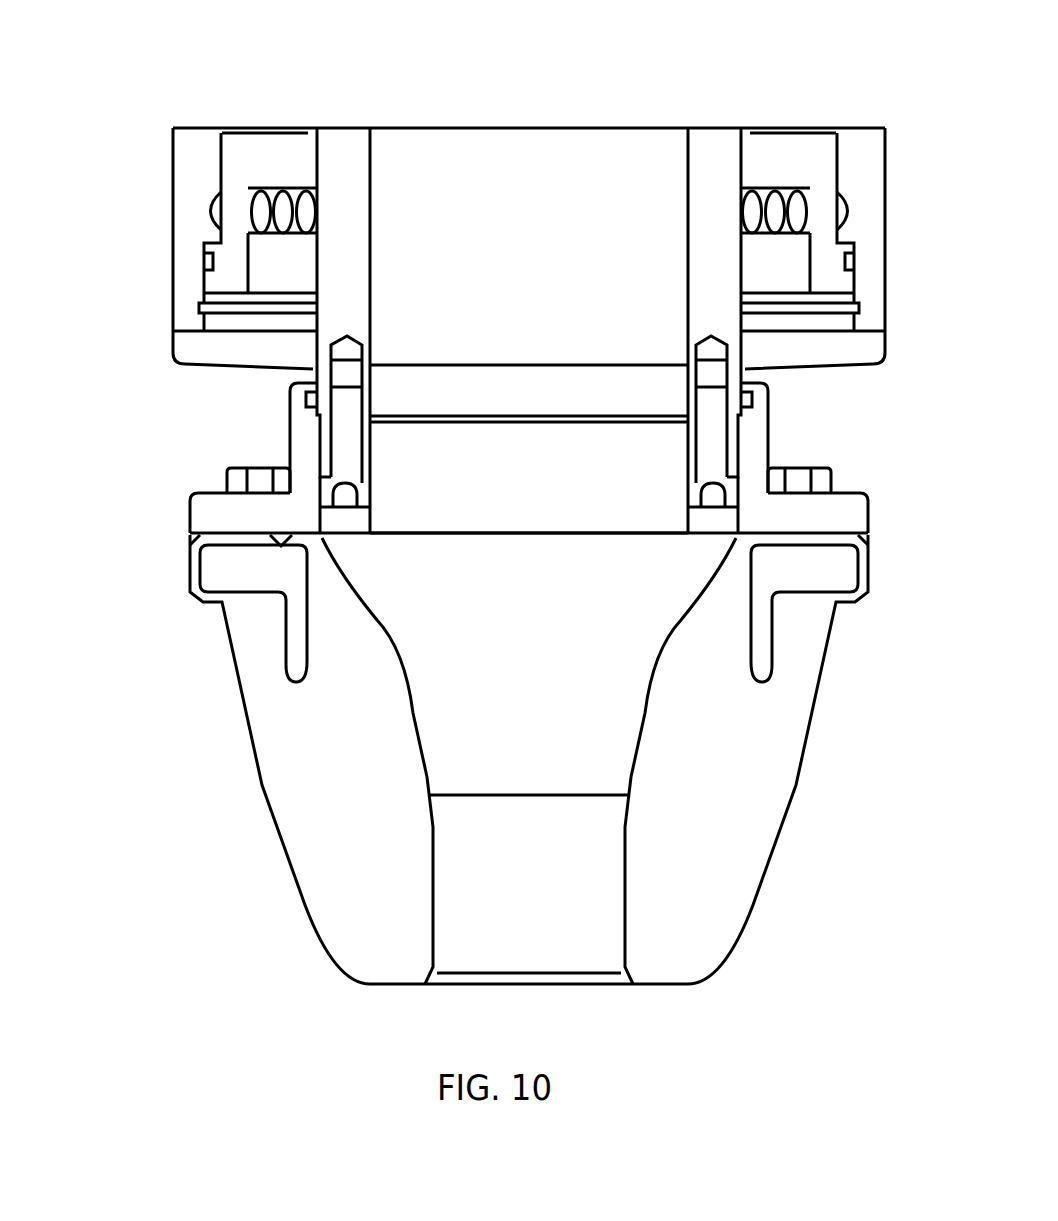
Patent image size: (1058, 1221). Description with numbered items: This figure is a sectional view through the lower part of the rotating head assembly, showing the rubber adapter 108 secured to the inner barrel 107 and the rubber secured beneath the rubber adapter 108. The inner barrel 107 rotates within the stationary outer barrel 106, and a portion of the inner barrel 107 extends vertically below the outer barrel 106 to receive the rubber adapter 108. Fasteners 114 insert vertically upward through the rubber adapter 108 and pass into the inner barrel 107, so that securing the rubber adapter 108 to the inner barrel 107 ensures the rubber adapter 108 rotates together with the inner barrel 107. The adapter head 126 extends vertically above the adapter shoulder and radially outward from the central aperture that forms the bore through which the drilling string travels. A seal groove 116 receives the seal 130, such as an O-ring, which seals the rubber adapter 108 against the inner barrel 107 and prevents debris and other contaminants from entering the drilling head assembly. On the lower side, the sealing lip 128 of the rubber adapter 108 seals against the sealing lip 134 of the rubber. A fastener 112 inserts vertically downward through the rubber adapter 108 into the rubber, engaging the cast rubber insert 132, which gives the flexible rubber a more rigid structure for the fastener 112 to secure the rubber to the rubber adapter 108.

The outer barrel 106 is at (858, 148).
The inner barrel 107 is at (708, 140).
The rubber adapter 108 is at (857, 515).
The fastener 112 is at (830, 473).
The fastener 114 is at (336, 440).
The seal groove 116 is at (754, 402).
The adapter head 126 is at (290, 391).
The sealing lip 128 is at (280, 540).
The seal 130 is at (306, 404).
The cast rubber insert 132 is at (796, 577).
The sealing lip 134 is at (284, 540).